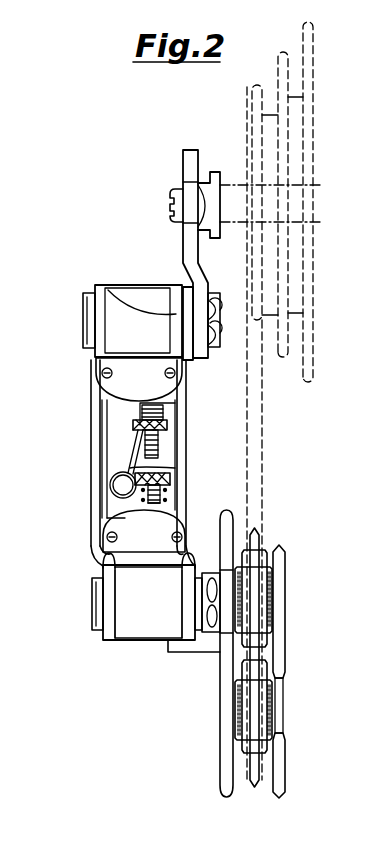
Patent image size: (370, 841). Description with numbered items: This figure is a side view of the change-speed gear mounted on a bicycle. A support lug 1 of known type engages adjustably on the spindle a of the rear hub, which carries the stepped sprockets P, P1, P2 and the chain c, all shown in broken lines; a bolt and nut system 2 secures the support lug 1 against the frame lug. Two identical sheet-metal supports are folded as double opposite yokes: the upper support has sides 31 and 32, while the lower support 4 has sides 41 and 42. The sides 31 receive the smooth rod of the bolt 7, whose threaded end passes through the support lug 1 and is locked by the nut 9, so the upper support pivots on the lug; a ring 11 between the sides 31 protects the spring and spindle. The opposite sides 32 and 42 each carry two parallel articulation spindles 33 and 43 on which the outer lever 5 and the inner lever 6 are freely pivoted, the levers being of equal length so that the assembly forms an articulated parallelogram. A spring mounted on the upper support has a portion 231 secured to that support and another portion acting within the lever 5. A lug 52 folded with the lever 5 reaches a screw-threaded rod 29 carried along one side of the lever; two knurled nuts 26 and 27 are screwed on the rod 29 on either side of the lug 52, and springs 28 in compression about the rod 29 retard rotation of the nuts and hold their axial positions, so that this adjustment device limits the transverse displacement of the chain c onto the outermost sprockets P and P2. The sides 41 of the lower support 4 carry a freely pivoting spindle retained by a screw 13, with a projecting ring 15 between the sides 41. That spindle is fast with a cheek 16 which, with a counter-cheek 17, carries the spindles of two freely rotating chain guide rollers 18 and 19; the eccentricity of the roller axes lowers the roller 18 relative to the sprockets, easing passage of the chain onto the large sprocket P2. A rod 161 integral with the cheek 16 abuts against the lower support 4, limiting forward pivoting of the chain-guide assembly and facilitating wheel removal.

The support lug 1 is at (191, 164).
The bolt and nut system 2 is at (172, 193).
The spindle a is at (316, 200).
The sprocket P is at (254, 317).
The sprocket P1 is at (281, 331).
The sprocket P2 is at (305, 325).
The chain c is at (257, 493).
The ring 11 is at (145, 297).
The sides of upper support yoke 31 is at (118, 290).
The bolt 7 is at (96, 361).
The nut 9 is at (214, 318).
The sides of upper support yoke 32 is at (127, 391).
The articulation spindles 33 is at (175, 376).
The lever 5 is at (101, 420).
The knurled nut 27 is at (167, 424).
The screw-threaded rod 29 is at (160, 445).
The spring portion 231 is at (136, 448).
The lever 6 is at (173, 477).
The lug 52 is at (112, 486).
The knurled nut 26 is at (170, 483).
The springs 28 is at (152, 504).
The sides of lower support yoke 42 is at (150, 520).
The articulation spindles 43 is at (114, 539).
The lower support 4 is at (104, 553).
The projecting ring 15 is at (158, 625).
The sides of lower support yoke 41 is at (185, 592).
The screw 13 is at (93, 620).
The rod 161 is at (210, 645).
The cheek 16 is at (226, 708).
The chain guide roller 18 is at (260, 548).
The counter-cheek 17 is at (279, 664).
The chain guide roller 19 is at (253, 715).